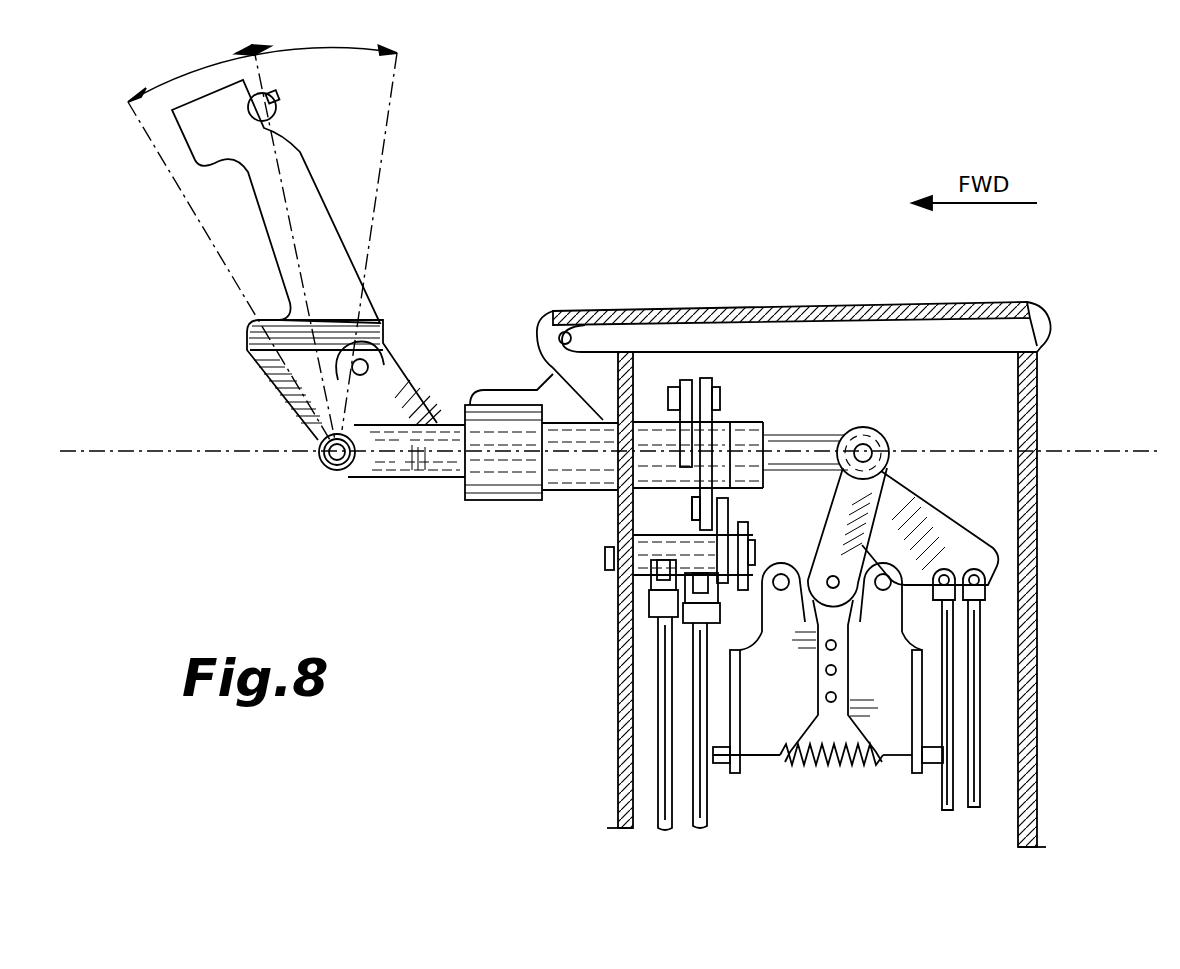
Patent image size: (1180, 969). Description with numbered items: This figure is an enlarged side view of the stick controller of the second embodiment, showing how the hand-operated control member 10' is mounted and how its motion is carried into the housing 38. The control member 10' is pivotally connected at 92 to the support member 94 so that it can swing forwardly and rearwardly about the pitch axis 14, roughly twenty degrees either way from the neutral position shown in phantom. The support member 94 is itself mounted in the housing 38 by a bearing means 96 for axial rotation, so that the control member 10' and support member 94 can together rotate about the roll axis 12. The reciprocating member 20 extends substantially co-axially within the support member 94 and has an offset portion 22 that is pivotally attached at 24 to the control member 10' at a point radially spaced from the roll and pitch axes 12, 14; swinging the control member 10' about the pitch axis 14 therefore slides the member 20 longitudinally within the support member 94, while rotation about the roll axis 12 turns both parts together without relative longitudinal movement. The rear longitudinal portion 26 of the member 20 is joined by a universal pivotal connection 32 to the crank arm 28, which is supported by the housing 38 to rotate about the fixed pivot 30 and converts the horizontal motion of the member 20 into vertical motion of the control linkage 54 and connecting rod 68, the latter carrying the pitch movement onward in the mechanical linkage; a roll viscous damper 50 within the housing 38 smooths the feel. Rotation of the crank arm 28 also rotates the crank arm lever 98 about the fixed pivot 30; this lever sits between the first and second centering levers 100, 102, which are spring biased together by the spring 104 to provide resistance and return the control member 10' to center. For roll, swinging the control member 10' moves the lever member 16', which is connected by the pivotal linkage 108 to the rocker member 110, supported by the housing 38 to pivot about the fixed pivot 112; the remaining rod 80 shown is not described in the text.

The control member 10' is at (312, 201).
The roll axis 12 is at (163, 447).
The pitch axis 14 is at (333, 466).
The lever member 16' is at (694, 382).
The reciprocating member 20 is at (652, 490).
The offset portion 22 is at (413, 395).
The pivotal attachment 24 is at (370, 366).
The rear longitudinal portion 26 is at (812, 450).
The crank arm 28 is at (900, 510).
The fixed pivot 30 is at (830, 578).
The universal pivotal connection 32 is at (867, 452).
The housing 38 is at (622, 682).
The roll viscous damper 50 is at (662, 715).
The control linkage 54 is at (980, 682).
The connecting rod 68 is at (957, 780).
The control rod 80 is at (698, 757).
The pivotal connection 92 is at (350, 466).
The support member 94 is at (405, 462).
The bearing means 96 is at (500, 493).
The crank arm lever 98 is at (830, 722).
The first centering lever 100 is at (897, 735).
The second centering lever 102 is at (777, 722).
The spring 104 is at (857, 767).
The pivotal linkage 108 is at (703, 493).
The rocker member 110 is at (620, 604).
The fixed pivot 112 is at (603, 567).